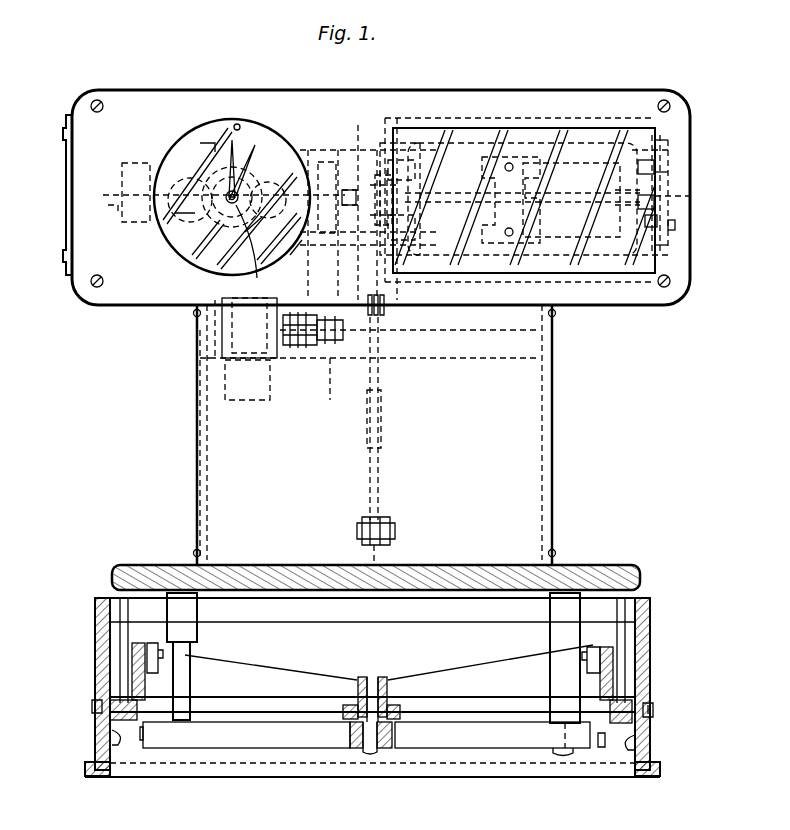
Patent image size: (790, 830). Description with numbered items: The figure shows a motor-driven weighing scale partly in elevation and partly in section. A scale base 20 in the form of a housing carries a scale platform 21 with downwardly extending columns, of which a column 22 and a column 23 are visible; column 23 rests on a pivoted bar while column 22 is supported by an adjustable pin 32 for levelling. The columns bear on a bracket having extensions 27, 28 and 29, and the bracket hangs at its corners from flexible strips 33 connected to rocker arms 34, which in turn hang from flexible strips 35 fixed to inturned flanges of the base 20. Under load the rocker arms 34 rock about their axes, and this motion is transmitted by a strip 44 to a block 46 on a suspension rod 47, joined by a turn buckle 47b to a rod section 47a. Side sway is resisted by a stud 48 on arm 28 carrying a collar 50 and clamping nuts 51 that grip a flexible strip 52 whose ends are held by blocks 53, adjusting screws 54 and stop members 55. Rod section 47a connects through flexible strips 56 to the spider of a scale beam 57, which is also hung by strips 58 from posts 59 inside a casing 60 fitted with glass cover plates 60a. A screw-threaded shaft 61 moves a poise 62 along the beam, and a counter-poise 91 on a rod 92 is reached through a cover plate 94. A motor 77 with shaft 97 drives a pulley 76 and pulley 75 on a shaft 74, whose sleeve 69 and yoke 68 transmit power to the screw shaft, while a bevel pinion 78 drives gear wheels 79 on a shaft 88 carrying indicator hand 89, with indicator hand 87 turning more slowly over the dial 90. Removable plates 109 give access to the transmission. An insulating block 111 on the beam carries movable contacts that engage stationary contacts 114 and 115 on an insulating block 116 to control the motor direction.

The scale base 20 is at (651, 633).
The scale platform 21 is at (642, 578).
The column 22 is at (190, 611).
The column 23 is at (550, 635).
The extension 27 is at (560, 735).
The arm 28 is at (350, 735).
The extension 29 is at (150, 735).
The pin 32 is at (183, 667).
The flexible strip 33 is at (160, 684).
The rocker arm 34 is at (112, 662).
The flexible strip 35 is at (120, 632).
The strip 44 is at (370, 549).
The block 46 is at (392, 522).
The suspension rod 47 is at (370, 482).
The rod section 47a is at (382, 382).
The turn buckle 47b is at (382, 420).
The stud 48 is at (382, 680).
The collar 50 is at (358, 690).
The clamping nut 51 is at (400, 714).
The flexible strip 52 is at (285, 703).
The block 53 is at (108, 713).
The adjusting screw 54 is at (92, 707).
The stop member 55 is at (118, 746).
The flexible strip 56 is at (369, 242).
The scale beam 57 is at (553, 130).
The strip 58 is at (441, 128).
The post 59 is at (420, 199).
The casing 60 is at (676, 226).
The glass cover plate 60a is at (600, 252).
The screw-threaded shaft 61 is at (561, 200).
The poise 62 is at (501, 118).
The yoke 68 is at (390, 128).
The sleeve 69 is at (359, 205).
The shaft 74 is at (294, 258).
The pulley 75 is at (322, 162).
The pulley 76 is at (312, 346).
The motor 77 is at (205, 351).
The bevel pinion 78 is at (280, 148).
The gear wheel 79 is at (202, 268).
The indicator hand 87 is at (247, 135).
The shaft 88 is at (262, 286).
The indicator hand 89 is at (218, 142).
The dial 90 is at (178, 243).
The counter-poise 91 is at (137, 163).
The rod 92 is at (110, 207).
The cover plate 94 is at (66, 157).
The motor shaft 97 is at (340, 345).
The removable plate 109 is at (532, 436).
The insulating block 111 is at (696, 193).
The stationary contact 114 is at (672, 140).
The stationary contact 115 is at (675, 245).
The insulating block 116 is at (680, 172).